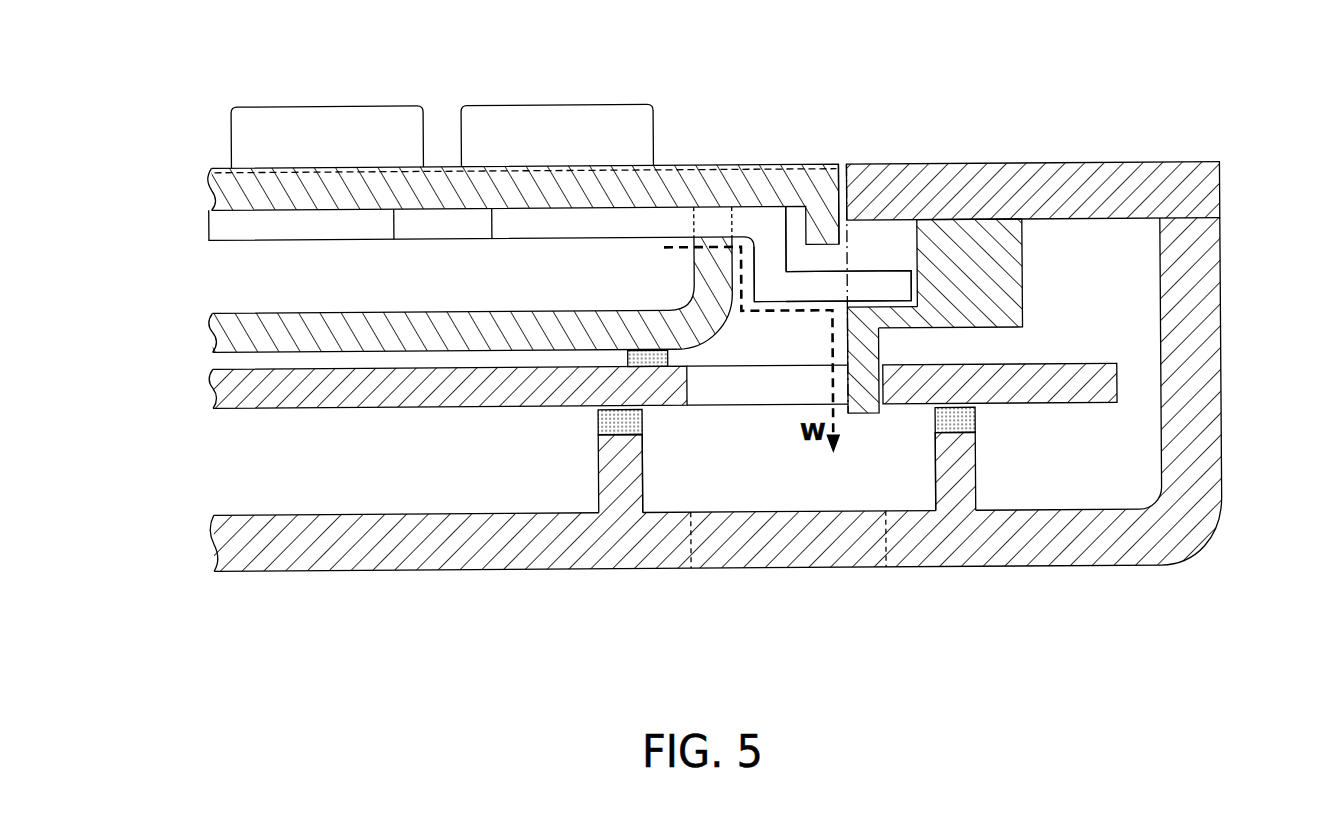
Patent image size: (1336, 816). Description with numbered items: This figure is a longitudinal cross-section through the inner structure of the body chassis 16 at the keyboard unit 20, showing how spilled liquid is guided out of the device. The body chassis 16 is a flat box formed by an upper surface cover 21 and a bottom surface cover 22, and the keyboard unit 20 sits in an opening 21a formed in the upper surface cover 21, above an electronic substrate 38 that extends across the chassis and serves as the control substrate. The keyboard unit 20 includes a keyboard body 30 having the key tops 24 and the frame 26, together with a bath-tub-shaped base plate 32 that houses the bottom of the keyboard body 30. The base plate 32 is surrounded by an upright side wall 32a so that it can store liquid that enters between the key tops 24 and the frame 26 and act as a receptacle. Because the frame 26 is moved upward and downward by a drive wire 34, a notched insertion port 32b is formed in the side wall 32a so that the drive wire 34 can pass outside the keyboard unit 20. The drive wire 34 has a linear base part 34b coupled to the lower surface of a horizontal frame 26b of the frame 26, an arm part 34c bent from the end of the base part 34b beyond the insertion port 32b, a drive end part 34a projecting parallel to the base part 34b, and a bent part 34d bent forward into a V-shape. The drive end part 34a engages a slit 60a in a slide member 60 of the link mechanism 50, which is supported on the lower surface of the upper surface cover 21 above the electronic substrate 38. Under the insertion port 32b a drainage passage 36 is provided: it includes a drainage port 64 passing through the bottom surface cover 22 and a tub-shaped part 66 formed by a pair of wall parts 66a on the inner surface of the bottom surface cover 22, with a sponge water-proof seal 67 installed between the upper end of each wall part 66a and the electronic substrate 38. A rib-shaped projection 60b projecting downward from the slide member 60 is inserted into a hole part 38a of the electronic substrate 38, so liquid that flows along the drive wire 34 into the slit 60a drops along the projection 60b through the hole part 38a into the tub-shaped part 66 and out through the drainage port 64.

The body chassis 16 is at (724, 359).
The keyboard unit 20 is at (523, 126).
The upper surface cover 21 is at (1010, 164).
The opening 21a is at (840, 192).
The bottom surface cover 22 is at (1073, 570).
The key tops 24 is at (325, 123).
The frame 26 is at (523, 149).
The horizontal frame 26b is at (367, 170).
The keyboard body 30 is at (630, 277).
The base plate 32 is at (521, 345).
The side wall 32a is at (690, 262).
The insertion port 32b is at (712, 279).
The drive wire 34 is at (565, 203).
The drive end part 34a is at (877, 283).
The base part 34b is at (312, 226).
The arm part 34c is at (773, 253).
The bent part 34d is at (477, 226).
The drainage passage 36 is at (823, 480).
The electronic substrate 38 is at (663, 420).
The hole part 38a is at (712, 406).
The link mechanism 50 is at (1073, 283).
The slide member 60 is at (974, 284).
The slit 60a is at (908, 255).
The projection 60b is at (865, 413).
The drainage port 64 is at (707, 545).
The tub-shaped part 66 is at (792, 533).
The wall part 66a is at (618, 460).
The water-proof seal 67 is at (598, 420).